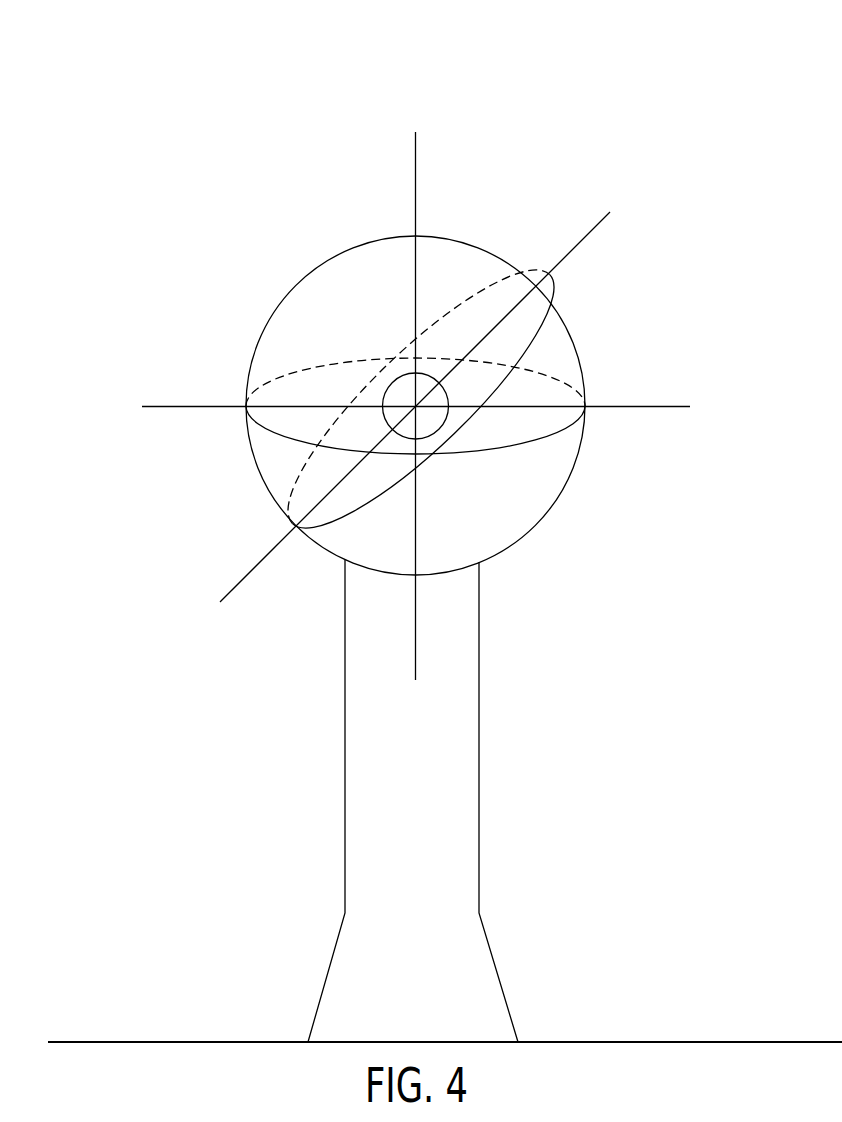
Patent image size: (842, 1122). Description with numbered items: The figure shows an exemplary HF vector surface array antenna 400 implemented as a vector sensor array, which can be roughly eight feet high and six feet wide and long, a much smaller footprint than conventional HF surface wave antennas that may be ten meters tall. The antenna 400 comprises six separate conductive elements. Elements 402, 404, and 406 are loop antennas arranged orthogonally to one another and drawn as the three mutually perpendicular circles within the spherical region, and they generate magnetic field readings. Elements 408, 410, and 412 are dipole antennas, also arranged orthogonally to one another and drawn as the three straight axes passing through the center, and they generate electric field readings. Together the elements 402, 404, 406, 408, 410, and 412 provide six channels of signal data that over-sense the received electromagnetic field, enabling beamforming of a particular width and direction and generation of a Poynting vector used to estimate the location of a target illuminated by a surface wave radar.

The antenna 400 is at (657, 100).
The conductive element 402 is at (468, 243).
The conductive element 404 is at (538, 265).
The conductive element 406 is at (493, 452).
The dipole antenna 408 is at (253, 570).
The dipole antenna 410 is at (180, 408).
The dipole antenna 412 is at (417, 157).